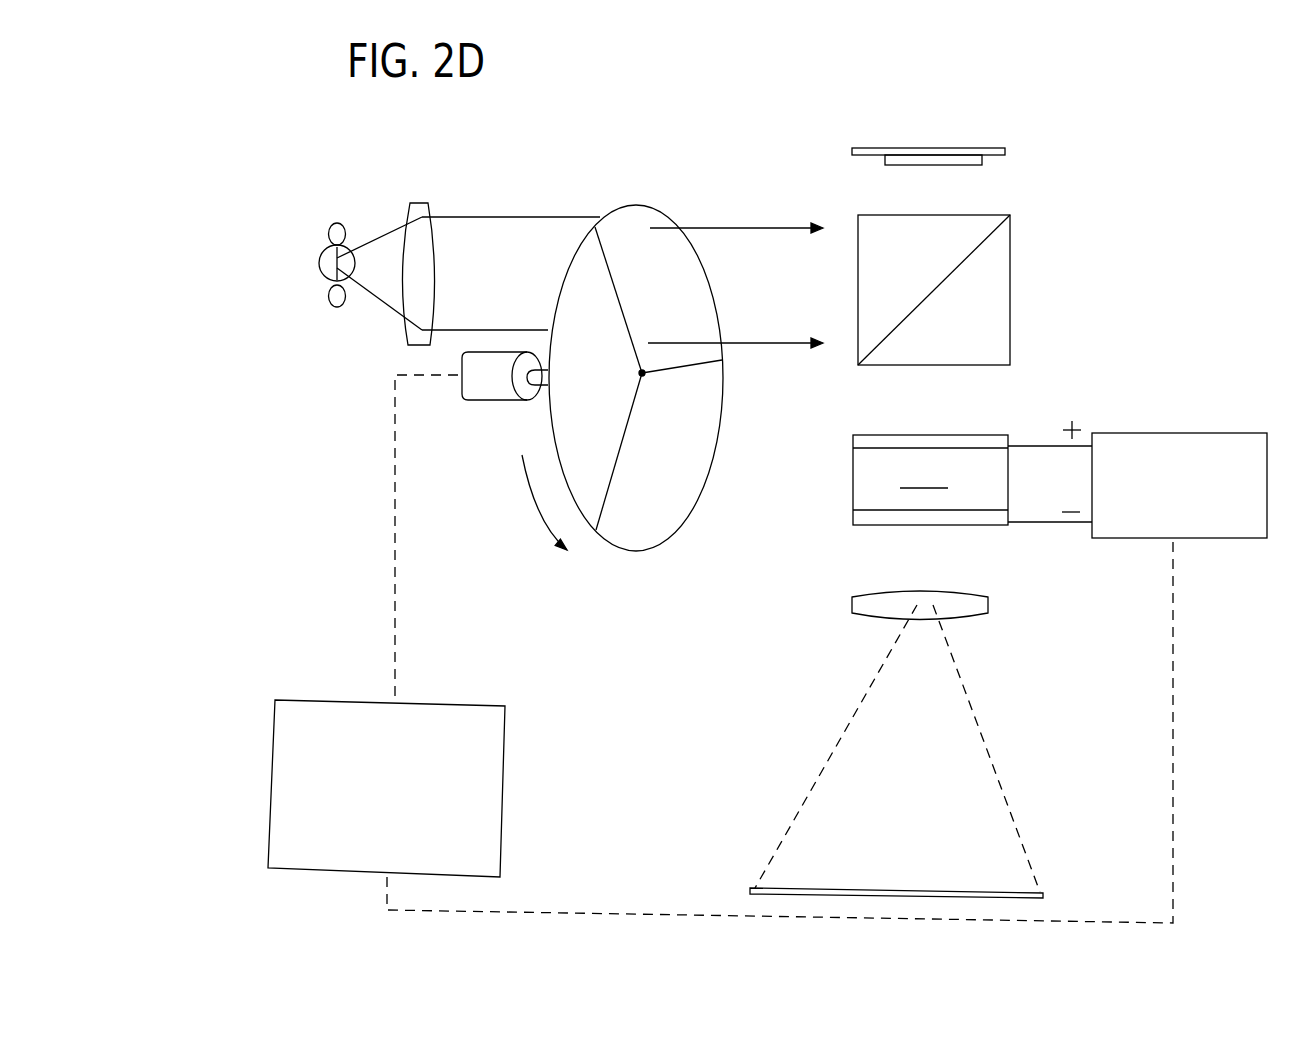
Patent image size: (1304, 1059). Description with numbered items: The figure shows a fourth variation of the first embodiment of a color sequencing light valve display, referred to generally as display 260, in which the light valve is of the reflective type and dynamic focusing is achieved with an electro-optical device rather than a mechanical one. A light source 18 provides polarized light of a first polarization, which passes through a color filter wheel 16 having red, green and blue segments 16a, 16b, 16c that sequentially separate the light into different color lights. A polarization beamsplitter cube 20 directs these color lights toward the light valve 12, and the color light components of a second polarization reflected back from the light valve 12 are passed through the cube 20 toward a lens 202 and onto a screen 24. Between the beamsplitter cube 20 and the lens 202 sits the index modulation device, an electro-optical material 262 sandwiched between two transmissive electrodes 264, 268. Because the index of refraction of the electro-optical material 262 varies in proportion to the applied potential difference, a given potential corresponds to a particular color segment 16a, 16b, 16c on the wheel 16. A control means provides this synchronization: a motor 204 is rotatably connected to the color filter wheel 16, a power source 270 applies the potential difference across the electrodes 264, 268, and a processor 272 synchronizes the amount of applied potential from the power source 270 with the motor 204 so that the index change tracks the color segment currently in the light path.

The light valve 12 is at (962, 148).
The color filter wheel 16 is at (635, 365).
The red segment 16a is at (640, 217).
The green segment 16b is at (700, 433).
The blue segment 16c is at (588, 267).
The light source 18 is at (337, 260).
The polarization beamsplitter cube 20 is at (1012, 260).
The screen 24 is at (752, 893).
The lens 202 is at (860, 617).
The motor 204 is at (487, 400).
The fourth variation of the first embodiment 260 is at (1150, 182).
The electro-optical material 262 is at (930, 467).
The transmissive electrode 264 is at (987, 435).
The transmissive electrode 268 is at (858, 522).
The power source 270 is at (1217, 433).
The processor 272 is at (298, 700).